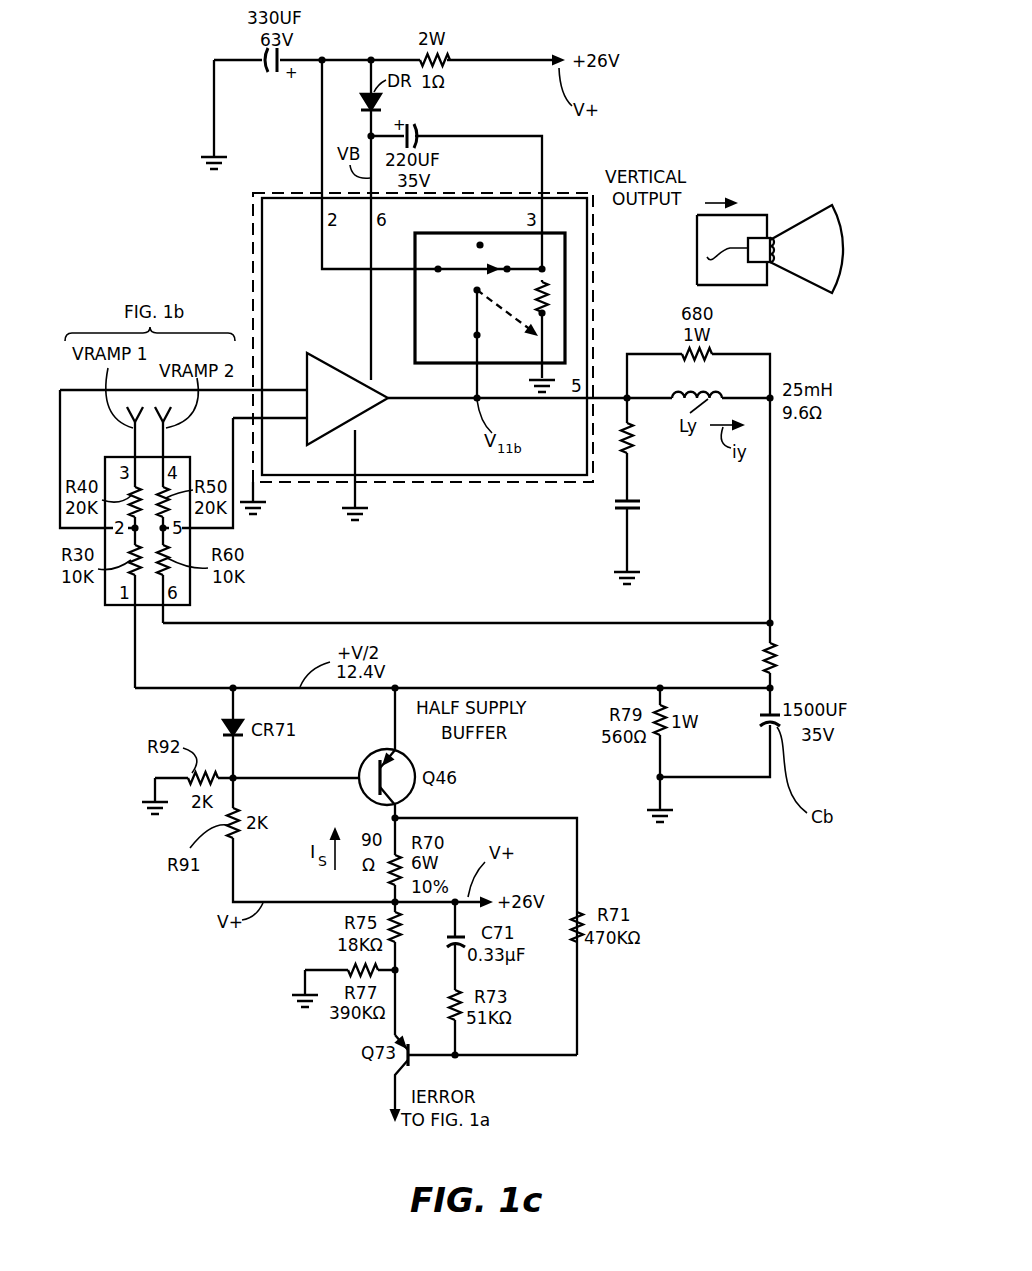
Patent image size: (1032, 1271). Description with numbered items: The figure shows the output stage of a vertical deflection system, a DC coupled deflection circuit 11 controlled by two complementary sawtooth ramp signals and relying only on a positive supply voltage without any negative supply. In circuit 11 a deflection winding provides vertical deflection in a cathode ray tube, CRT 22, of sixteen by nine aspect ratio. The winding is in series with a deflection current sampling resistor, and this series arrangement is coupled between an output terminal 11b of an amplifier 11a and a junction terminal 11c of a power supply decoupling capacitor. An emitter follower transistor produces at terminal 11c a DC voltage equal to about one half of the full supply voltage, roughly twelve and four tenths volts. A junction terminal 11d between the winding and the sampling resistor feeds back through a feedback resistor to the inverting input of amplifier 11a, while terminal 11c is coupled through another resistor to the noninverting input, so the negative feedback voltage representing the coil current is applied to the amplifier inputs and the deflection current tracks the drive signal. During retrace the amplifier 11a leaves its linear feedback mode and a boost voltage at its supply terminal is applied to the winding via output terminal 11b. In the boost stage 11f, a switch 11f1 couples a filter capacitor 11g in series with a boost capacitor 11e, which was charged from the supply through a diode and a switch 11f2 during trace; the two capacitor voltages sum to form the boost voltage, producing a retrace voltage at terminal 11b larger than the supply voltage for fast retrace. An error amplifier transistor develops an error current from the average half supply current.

The deflection circuit 11 is at (442, 604).
The amplifier 11a is at (333, 430).
The output terminal 11b is at (625, 403).
The junction terminal 11c is at (768, 685).
The junction terminal 11d is at (770, 622).
The boost capacitor 11e is at (418, 128).
The boost stage 11f is at (565, 308).
The switch 11f1 is at (467, 273).
The switch 11f2 is at (552, 331).
The filter capacitor 11g is at (267, 66).
The cathode ray tube 22 is at (843, 262).